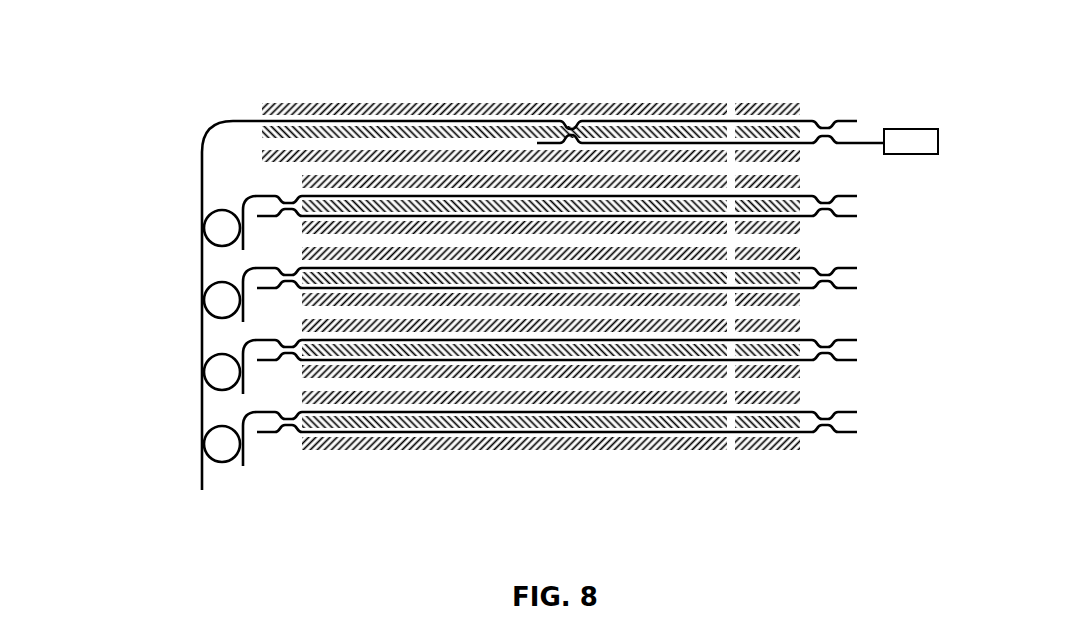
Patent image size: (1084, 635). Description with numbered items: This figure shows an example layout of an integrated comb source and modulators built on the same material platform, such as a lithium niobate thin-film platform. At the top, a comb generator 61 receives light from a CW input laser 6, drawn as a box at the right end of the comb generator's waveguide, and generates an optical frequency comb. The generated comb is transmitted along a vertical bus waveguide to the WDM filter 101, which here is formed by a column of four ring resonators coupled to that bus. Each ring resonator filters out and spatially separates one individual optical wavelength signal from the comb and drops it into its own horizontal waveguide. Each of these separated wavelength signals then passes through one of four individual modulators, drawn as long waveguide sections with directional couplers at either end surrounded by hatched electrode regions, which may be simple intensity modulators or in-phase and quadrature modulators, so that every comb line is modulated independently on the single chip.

The wavelength division multiplexing (WDM) filter 101 is at (108, 330).
The comb generator 61 is at (393, 62).
The CW input laser 6 is at (922, 138).